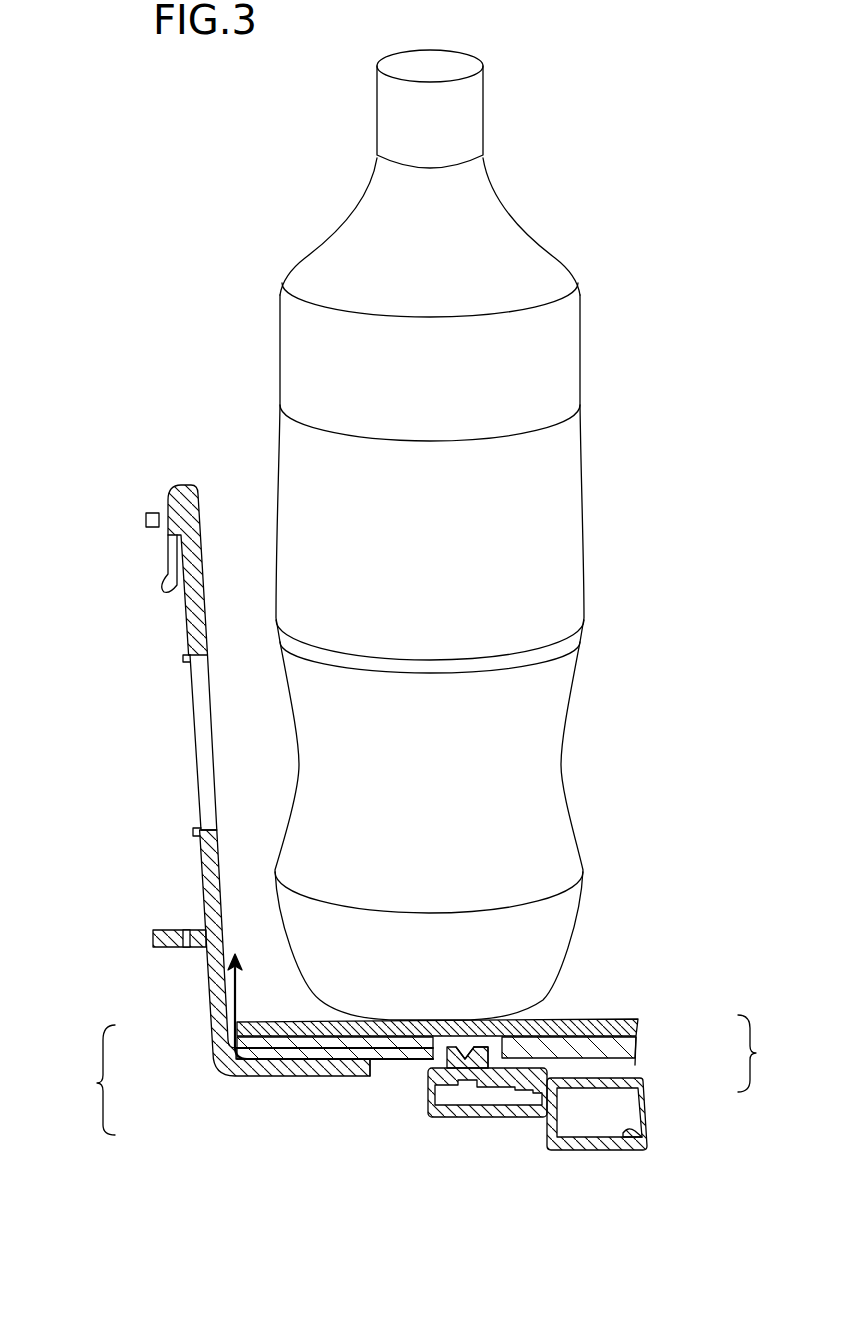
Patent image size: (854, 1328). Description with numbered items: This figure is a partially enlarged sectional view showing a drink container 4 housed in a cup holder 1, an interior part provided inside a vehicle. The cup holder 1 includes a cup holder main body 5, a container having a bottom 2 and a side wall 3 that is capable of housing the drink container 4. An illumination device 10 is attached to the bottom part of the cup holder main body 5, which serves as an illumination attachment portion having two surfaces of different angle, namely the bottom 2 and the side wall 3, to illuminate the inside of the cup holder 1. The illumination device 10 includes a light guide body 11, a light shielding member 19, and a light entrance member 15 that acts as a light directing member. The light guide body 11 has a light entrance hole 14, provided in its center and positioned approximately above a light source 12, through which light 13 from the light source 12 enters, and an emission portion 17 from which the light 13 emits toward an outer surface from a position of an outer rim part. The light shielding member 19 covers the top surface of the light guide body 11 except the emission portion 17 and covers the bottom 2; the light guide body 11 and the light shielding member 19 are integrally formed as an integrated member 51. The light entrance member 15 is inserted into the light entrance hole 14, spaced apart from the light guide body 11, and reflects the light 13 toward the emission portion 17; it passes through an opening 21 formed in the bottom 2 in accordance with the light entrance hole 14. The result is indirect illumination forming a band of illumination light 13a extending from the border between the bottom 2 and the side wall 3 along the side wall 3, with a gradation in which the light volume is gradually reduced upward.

The cup holder 1 is at (131, 495).
The bottom 2 is at (243, 1074).
The side wall 3 is at (203, 862).
The drink container 4 is at (583, 351).
The cup holder main body 5 is at (96, 1080).
The illumination device 10 is at (555, 1160).
The light guide body 11 is at (638, 1050).
The light source 12 is at (468, 1097).
The light 13 is at (290, 1078).
The illumination light 13a is at (209, 975).
The light entrance hole 14 is at (493, 1045).
The light entrance member 15 is at (480, 1050).
The emission portion 17 is at (218, 988).
The light shielding member 19 is at (638, 1032).
The opening 21 is at (372, 1078).
The integrated member 51 is at (762, 1053).